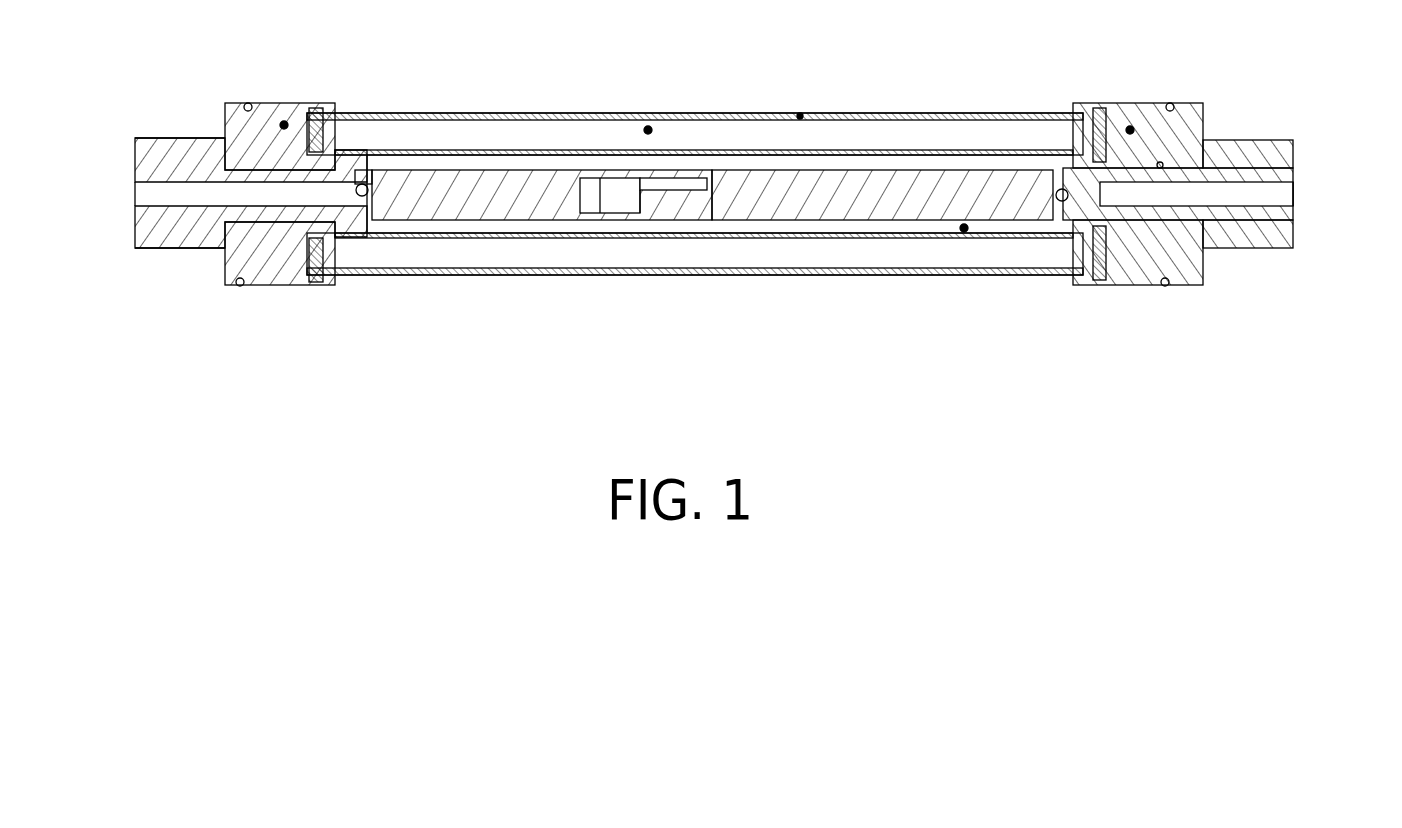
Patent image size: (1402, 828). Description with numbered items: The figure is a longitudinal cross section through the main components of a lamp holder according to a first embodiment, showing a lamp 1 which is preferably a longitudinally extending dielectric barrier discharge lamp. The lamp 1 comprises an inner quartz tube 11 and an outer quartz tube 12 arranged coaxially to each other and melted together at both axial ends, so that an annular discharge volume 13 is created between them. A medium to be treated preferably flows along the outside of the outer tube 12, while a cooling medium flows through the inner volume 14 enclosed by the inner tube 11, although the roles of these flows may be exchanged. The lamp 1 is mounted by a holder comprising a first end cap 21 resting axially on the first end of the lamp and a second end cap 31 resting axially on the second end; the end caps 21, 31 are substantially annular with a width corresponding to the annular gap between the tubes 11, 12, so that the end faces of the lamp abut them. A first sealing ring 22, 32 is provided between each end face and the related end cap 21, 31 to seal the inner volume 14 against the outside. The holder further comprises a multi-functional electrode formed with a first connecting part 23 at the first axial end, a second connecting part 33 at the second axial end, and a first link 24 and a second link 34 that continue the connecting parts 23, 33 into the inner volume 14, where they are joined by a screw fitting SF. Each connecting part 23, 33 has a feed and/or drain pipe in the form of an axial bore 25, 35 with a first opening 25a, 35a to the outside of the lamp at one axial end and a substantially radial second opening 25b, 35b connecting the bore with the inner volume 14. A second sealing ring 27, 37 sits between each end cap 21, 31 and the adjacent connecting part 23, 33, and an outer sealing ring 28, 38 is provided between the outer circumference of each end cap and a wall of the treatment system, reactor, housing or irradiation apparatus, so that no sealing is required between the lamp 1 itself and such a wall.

The lamp 1 is at (725, 326).
The inner quartz tube 11 is at (725, 147).
The outer quartz tube 12 is at (802, 113).
The annular discharge volume 13 is at (648, 127).
The inner volume 14 is at (965, 232).
The first end cap 21 is at (1132, 127).
The first sealing ring 22 is at (1100, 101).
The first connecting part 23 is at (1259, 131).
The first link 24 is at (878, 200).
The axial bore 25 is at (1233, 194).
The first opening 25a is at (1298, 190).
The second opening 25b is at (1062, 181).
The second sealing ring 27 is at (1161, 224).
The outer sealing ring 28 is at (1173, 101).
The second end cap 31 is at (284, 122).
The first sealing ring 32 is at (322, 106).
The second connecting part 33 is at (129, 260).
The second link 34 is at (492, 200).
The axial bore 35 is at (147, 188).
The first opening 35a is at (131, 190).
The second opening 35b is at (373, 182).
The second sealing ring 37 is at (243, 158).
The outer sealing ring 38 is at (247, 101).
The screw fitting SF is at (622, 226).